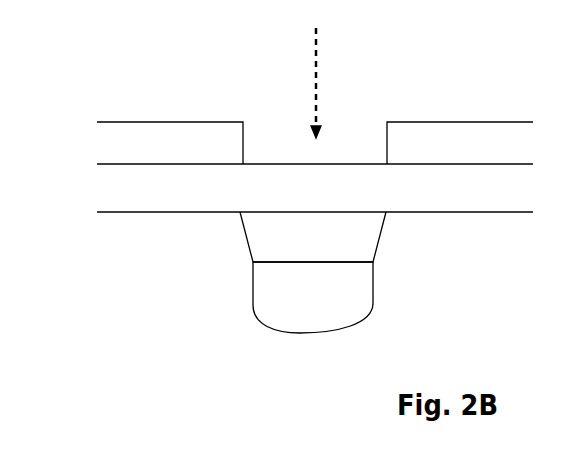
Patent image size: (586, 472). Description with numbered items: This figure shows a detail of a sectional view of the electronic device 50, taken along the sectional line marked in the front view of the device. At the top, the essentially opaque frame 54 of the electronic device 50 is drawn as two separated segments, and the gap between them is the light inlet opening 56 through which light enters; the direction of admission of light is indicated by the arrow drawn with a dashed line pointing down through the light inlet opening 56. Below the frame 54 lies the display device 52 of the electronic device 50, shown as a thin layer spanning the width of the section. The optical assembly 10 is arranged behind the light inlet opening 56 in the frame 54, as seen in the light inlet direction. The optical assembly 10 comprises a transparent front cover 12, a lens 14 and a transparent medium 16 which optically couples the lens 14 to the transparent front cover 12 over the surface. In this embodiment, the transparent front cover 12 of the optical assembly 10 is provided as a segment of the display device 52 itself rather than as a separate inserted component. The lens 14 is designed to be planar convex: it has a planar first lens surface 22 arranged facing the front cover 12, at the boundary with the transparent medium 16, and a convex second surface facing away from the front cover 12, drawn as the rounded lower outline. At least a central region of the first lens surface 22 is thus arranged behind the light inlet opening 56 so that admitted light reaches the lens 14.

The optical assembly 10 is at (359, 260).
The transparent front cover 12 is at (301, 260).
The lens 14 is at (318, 313).
The transparent medium 16 is at (318, 255).
The first lens surface 22 is at (300, 262).
The electronic device 50 is at (512, 94).
The display device 52 is at (135, 195).
The frame 54 is at (170, 138).
The light inlet opening 56 is at (284, 130).